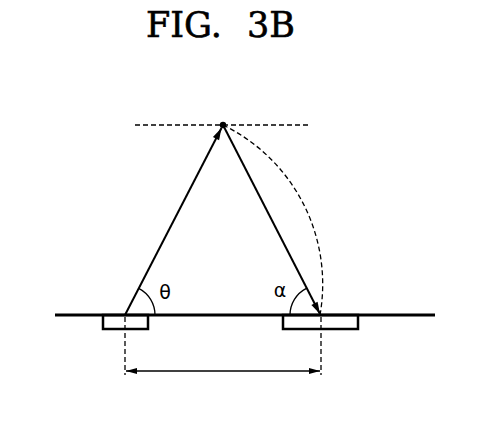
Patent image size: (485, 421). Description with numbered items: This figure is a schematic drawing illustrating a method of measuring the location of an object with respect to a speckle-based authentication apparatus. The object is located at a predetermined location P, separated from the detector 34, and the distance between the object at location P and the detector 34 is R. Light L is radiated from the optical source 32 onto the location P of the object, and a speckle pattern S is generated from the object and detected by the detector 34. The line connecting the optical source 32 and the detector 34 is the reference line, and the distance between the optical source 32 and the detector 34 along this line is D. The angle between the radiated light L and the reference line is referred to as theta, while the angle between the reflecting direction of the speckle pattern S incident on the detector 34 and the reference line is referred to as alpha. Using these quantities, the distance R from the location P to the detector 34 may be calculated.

The optical source 32 is at (103, 322).
The detector 34 is at (358, 322).
The location P is at (222, 111).
The light L is at (167, 235).
The distance R is at (273, 220).
The speckle pattern S is at (250, 178).
The distance D is at (223, 383).